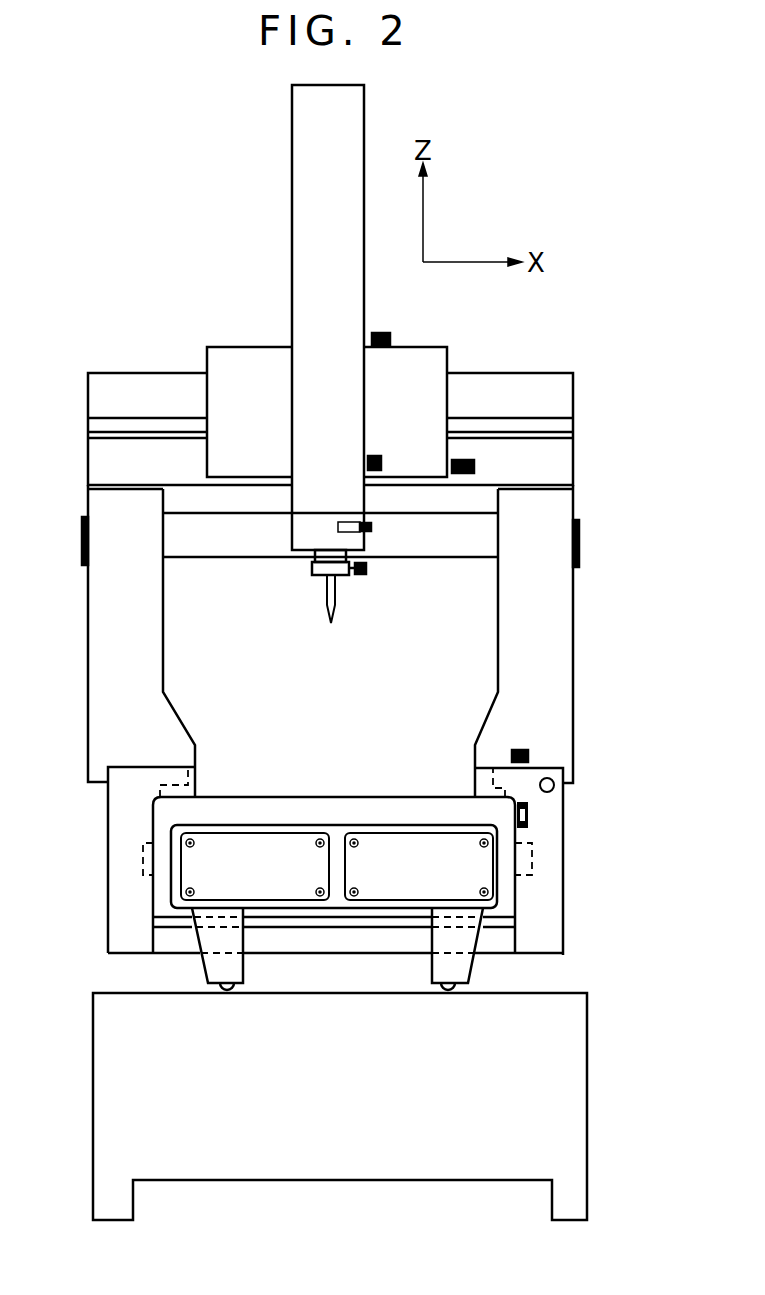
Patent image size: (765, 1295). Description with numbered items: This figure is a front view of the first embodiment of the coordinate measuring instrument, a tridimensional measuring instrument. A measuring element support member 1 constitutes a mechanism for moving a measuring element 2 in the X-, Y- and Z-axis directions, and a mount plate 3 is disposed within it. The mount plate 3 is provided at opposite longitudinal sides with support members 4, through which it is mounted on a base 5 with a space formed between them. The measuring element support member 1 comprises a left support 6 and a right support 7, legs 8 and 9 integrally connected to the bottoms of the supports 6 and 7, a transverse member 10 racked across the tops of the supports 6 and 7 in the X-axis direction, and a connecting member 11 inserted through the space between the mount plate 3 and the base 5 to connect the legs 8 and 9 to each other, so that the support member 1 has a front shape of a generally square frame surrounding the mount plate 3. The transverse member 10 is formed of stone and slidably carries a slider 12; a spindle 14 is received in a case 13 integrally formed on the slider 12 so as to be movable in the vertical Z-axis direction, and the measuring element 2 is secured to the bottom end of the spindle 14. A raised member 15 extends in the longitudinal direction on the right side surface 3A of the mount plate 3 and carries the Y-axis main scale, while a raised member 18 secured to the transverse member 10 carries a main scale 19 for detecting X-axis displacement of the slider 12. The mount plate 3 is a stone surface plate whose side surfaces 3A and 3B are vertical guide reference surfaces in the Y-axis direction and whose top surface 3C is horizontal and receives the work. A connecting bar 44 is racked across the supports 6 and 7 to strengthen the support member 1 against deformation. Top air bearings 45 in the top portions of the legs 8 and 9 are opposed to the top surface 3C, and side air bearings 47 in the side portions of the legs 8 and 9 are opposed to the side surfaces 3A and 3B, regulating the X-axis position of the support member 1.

The measuring element support member 1 is at (88, 664).
The measuring element 2 is at (325, 592).
The mount plate 3 is at (294, 800).
The right side surface 3A is at (520, 905).
The left side surface 3B is at (150, 907).
The top surface 3C is at (384, 800).
The support members 4 is at (204, 975).
The base 5 is at (345, 1182).
The left support 6 is at (92, 594).
The right support 7 is at (568, 637).
The leg 8 is at (110, 876).
The leg 9 is at (565, 870).
The transverse member 10 is at (518, 382).
The connecting member 11 is at (342, 958).
The slider 12 is at (236, 352).
The case 13 is at (296, 207).
The spindle 14 is at (306, 558).
The raised member 15 is at (528, 815).
The raised member 18 is at (556, 442).
The main scale 19 is at (92, 427).
The connecting bar 44 is at (461, 557).
The top air bearings 45 is at (188, 770).
The side air bearings 47 is at (143, 843).